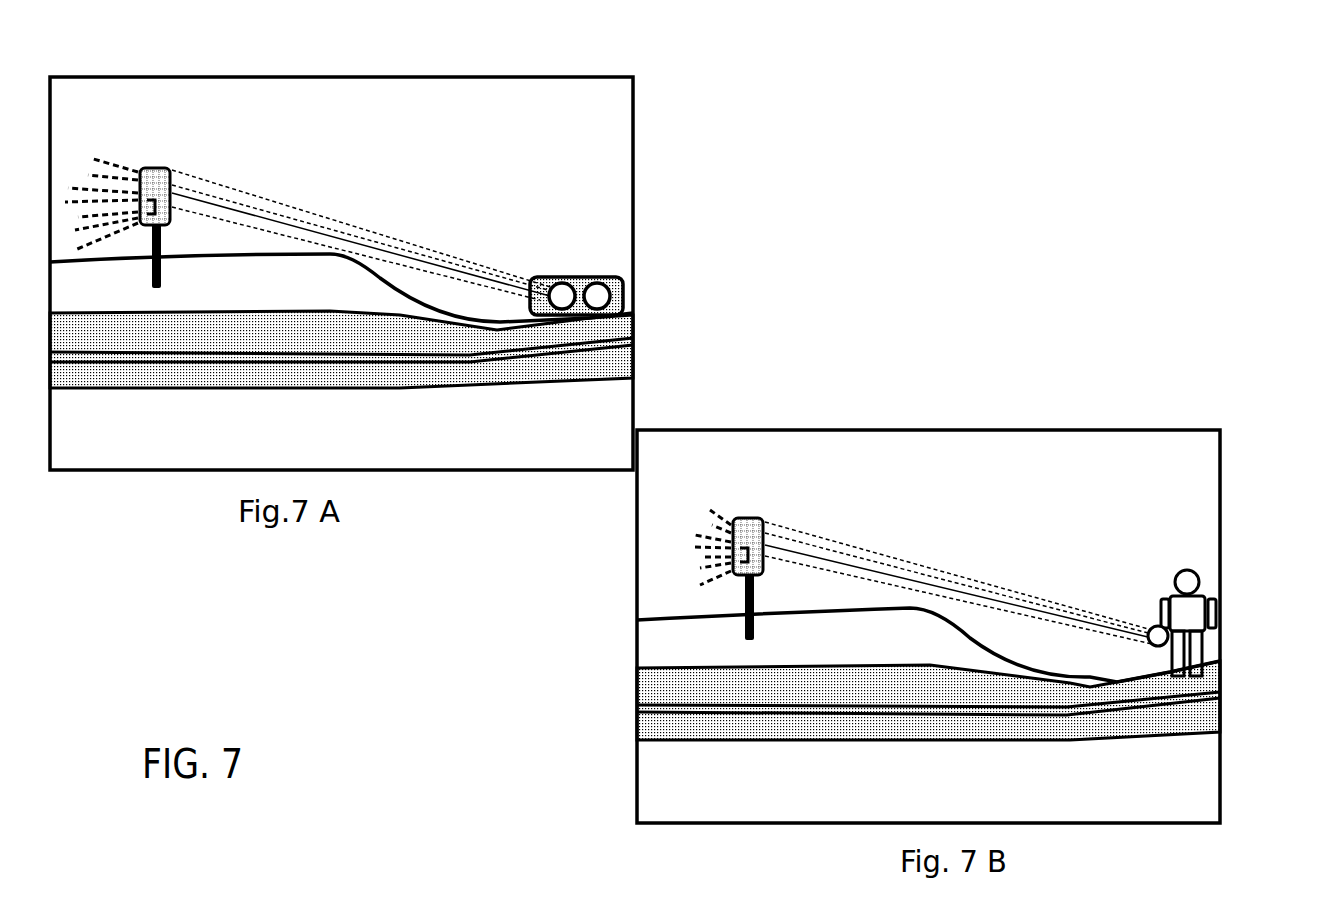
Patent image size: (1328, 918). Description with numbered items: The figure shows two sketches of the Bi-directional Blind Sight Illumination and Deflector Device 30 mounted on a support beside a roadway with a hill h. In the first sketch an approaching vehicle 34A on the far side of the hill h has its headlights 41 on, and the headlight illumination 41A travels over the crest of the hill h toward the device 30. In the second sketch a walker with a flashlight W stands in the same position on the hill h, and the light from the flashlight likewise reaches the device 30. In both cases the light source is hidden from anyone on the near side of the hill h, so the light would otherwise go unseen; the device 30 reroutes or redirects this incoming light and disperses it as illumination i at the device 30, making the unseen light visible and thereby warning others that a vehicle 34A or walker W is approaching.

In FIG. 7A, the Bi-directional Blind Sight Illumination and Deflector Device 30 is at (150, 168).
In FIG. 7B, the Bi-directional Blind Sight Illumination and Deflector Device 30 is at (752, 520).
In FIG. 7A, the headlight illumination 41A is at (292, 207).
In FIG. 7B, the headlight illumination 41A is at (878, 558).
In FIG. 7A, the headlights 41 is at (588, 272).
In FIG. 7A, the vehicle A 34A is at (645, 288).
In FIG. 7A, the illumination, dispersion at device i is at (100, 204).
In FIG. 7B, the illumination, dispersion at device i is at (698, 547).
In FIG. 7A, the hill h is at (345, 262).
In FIG. 7B, the hill h is at (930, 620).
In FIG. 7B, the walker with flashlight W is at (1208, 595).